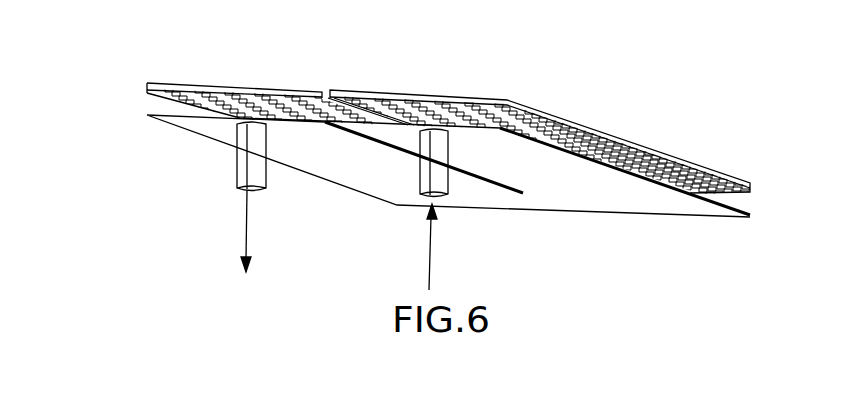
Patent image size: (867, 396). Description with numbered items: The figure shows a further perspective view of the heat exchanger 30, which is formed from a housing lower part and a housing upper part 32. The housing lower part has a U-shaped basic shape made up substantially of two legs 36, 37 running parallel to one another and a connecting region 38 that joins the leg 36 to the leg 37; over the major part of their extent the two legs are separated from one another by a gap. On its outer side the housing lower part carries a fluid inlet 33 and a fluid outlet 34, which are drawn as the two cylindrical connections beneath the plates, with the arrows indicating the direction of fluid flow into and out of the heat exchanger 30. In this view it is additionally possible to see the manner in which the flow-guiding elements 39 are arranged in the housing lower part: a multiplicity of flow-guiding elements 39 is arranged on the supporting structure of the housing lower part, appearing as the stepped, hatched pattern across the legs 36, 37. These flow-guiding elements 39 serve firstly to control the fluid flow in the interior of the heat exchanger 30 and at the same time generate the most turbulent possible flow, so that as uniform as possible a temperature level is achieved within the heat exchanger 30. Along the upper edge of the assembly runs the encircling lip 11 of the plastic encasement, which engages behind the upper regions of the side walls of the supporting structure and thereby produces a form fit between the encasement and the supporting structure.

The encircling lip 11 is at (518, 100).
The heat exchanger 30 is at (419, 202).
The housing upper part 32 is at (382, 188).
The fluid inlet 33 is at (438, 185).
The fluid outlet 34 is at (240, 177).
The leg 36 is at (643, 175).
The leg 37 is at (275, 101).
The connecting region 38 is at (538, 203).
The flow-guiding elements 39 is at (600, 142).